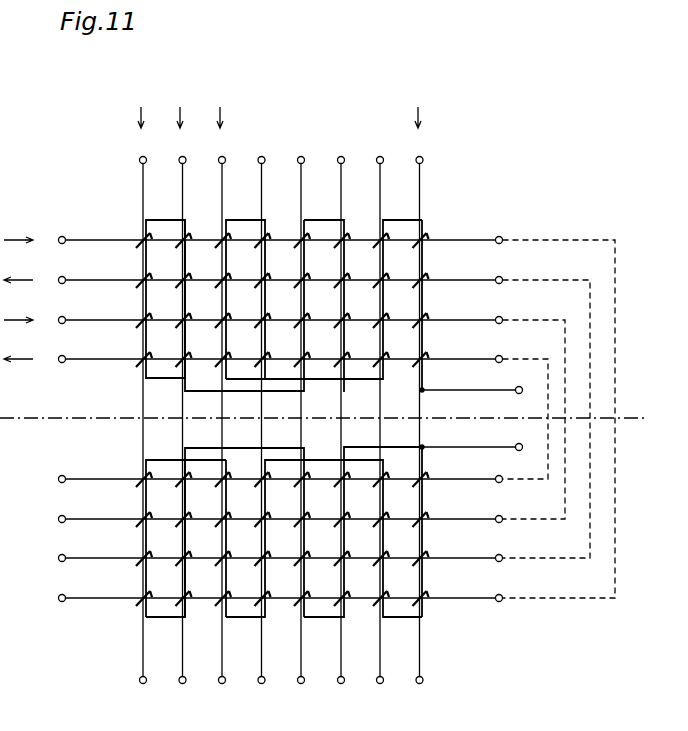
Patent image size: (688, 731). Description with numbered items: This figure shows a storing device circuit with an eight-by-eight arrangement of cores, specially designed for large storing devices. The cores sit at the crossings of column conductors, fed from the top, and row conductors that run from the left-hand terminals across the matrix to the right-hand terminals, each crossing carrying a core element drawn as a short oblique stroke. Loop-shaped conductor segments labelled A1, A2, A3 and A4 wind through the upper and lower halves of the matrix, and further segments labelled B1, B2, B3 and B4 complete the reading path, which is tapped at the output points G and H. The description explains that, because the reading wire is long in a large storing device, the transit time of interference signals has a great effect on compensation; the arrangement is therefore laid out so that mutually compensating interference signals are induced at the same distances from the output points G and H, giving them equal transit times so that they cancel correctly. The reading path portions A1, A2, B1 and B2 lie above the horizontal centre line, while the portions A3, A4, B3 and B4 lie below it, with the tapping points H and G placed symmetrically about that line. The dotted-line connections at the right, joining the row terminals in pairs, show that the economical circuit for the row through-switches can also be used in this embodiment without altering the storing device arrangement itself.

The first conductor loop A1 is at (148, 379).
The second conductor loop A2 is at (211, 391).
The third conductor loop A3 is at (148, 470).
The fourth conductor loop A4 is at (203, 460).
The first bus conductor B1 is at (345, 391).
The second bus conductor B2 is at (423, 371).
The third bus conductor B3 is at (344, 453).
The fourth bus conductor B4 is at (423, 476).
The output point H is at (478, 391).
The output point G is at (479, 448).